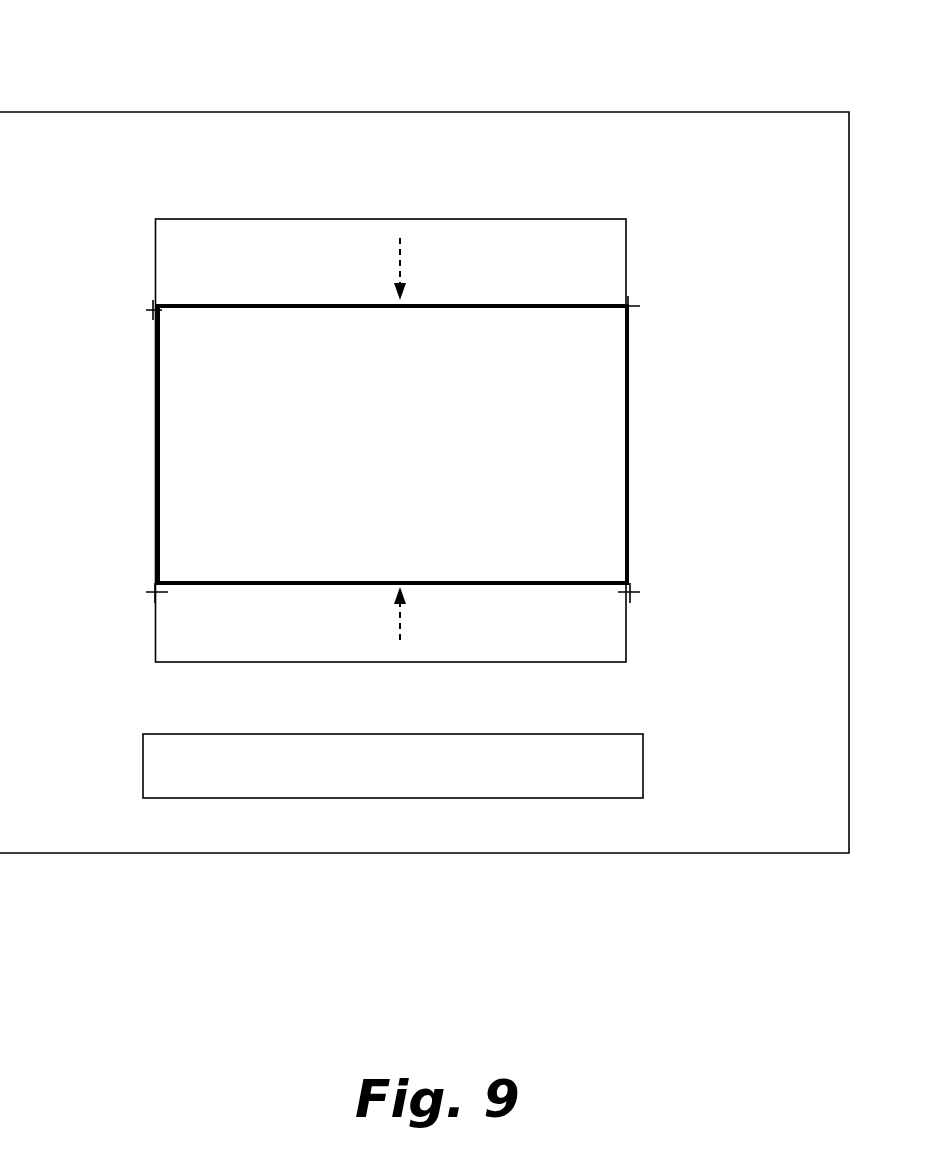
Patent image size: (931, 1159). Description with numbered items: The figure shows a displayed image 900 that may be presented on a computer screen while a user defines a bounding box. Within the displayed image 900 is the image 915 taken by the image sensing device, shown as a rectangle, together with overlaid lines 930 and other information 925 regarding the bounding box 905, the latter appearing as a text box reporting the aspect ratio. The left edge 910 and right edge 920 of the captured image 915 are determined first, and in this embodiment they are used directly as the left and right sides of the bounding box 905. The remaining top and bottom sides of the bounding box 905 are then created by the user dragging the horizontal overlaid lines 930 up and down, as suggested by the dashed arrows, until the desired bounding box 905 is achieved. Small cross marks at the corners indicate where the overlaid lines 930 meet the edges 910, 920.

The displayed image 900 is at (120, 103).
The bounding box 905 is at (630, 510).
The left edge of the image 910 is at (156, 455).
The image taken by the image sensing device 915 is at (566, 219).
The right edge of the image 920 is at (629, 394).
The other information regarding the bounding box 925 is at (143, 773).
The overlaid lines 930 is at (568, 306).